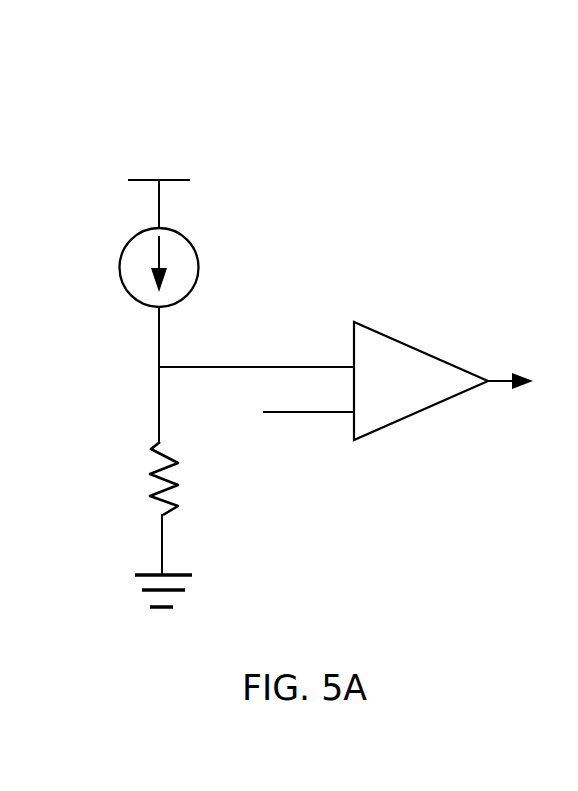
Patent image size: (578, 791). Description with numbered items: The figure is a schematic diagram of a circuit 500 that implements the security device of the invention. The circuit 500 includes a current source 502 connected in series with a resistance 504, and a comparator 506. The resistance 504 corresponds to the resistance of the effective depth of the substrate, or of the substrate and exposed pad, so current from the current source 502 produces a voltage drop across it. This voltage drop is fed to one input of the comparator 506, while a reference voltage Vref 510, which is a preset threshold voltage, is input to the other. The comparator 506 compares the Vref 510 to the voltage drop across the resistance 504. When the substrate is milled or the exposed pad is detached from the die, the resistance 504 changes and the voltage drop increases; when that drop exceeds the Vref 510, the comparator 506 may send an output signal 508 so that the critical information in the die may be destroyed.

The circuit 500 is at (66, 78).
The current source 502 is at (198, 247).
The resistance 504 is at (150, 495).
The comparator 506 is at (423, 407).
The output signal 508 is at (490, 380).
The reference voltage Vref 510 is at (289, 411).